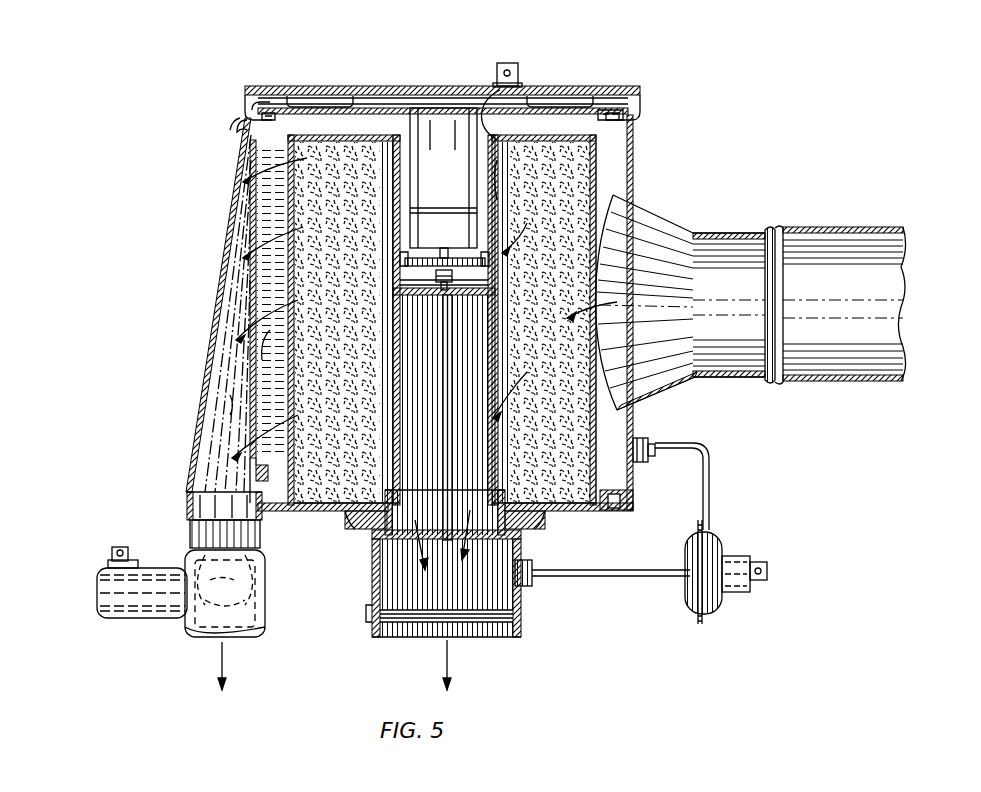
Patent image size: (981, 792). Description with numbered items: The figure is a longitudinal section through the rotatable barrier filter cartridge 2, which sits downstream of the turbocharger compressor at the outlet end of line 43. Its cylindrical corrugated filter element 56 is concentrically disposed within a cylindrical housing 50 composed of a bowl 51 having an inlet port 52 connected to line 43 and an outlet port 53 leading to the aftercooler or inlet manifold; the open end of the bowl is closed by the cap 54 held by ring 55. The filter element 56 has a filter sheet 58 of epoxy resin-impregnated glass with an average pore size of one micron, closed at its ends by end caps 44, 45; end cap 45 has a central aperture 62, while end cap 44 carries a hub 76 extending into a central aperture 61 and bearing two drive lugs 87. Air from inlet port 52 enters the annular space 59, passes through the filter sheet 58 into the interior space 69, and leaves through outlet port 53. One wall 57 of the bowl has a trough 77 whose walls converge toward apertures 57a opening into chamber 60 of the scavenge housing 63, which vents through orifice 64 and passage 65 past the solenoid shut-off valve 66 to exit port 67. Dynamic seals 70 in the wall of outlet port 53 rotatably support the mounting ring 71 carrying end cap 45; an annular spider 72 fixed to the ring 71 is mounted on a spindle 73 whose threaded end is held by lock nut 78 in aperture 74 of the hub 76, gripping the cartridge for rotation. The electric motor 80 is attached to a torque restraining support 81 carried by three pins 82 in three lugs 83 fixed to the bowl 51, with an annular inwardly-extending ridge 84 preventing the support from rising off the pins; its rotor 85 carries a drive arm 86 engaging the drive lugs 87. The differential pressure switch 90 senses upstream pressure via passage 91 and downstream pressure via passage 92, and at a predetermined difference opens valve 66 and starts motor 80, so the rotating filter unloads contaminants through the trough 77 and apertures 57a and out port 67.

The rotatable barrier filter cartridge 2 is at (603, 420).
The line 43 is at (845, 235).
The end cap 44 is at (600, 146).
The end cap 45 is at (283, 505).
The housing 50 is at (634, 155).
The bowl 51 is at (633, 130).
The inlet port 52 is at (672, 240).
The outlet port 53 is at (380, 630).
The cap 54 is at (375, 88).
The ring 55 is at (258, 110).
The filter element 56 is at (600, 178).
The wall 57 is at (252, 297).
The apertures 57a is at (250, 442).
The filter sheet 58 is at (350, 354).
The annular space 59 is at (262, 200).
The chamber 60 is at (236, 468).
The central aperture 61 is at (497, 168).
The central aperture 62 is at (500, 490).
The scavenge housing 63 is at (200, 443).
The orifice 64 is at (265, 605).
The passage 65 is at (175, 636).
The solenoid shut-off valve 66 is at (120, 575).
The exit port 67 is at (232, 638).
The space 69 is at (485, 404).
The dynamic seals 70 is at (522, 524).
The mounting ring 71 is at (598, 514).
The annular spider 72 is at (399, 494).
The spindle 73 is at (452, 358).
The aperture 74 is at (421, 392).
The hub 76 is at (385, 200).
The trough 77 is at (288, 312).
The lock nut 78 is at (471, 392).
The electric motor 80 is at (457, 199).
The torque restraining support 81 is at (605, 112).
The pins 82 is at (240, 128).
The lugs 83 is at (616, 120).
The annular inwardly-extending ridge 84 is at (300, 96).
The rotor 85 is at (452, 262).
The drive arm 86 is at (400, 265).
The drive lugs 87 is at (490, 288).
The differential pressure switch 90 is at (722, 548).
The passage 91 is at (716, 470).
The passage 92 is at (628, 580).